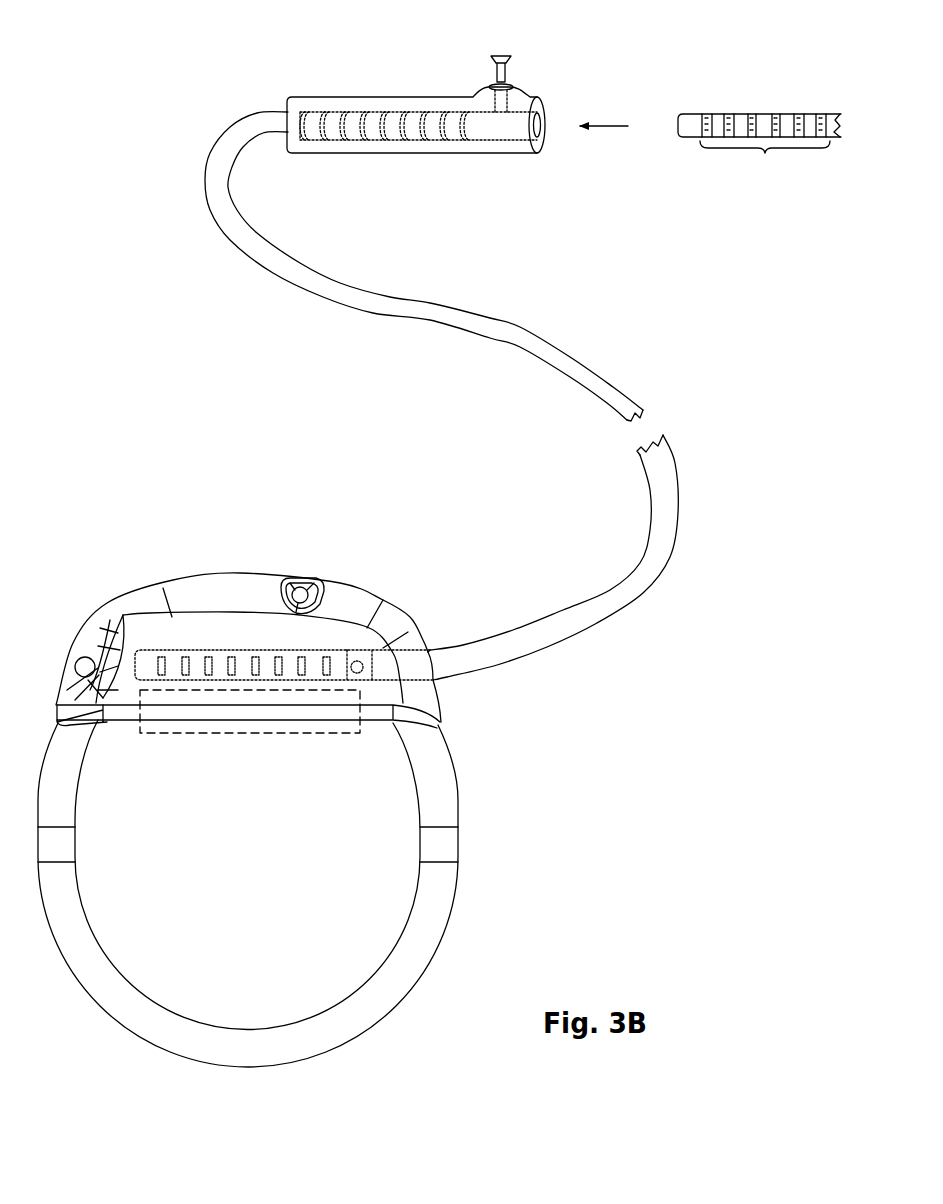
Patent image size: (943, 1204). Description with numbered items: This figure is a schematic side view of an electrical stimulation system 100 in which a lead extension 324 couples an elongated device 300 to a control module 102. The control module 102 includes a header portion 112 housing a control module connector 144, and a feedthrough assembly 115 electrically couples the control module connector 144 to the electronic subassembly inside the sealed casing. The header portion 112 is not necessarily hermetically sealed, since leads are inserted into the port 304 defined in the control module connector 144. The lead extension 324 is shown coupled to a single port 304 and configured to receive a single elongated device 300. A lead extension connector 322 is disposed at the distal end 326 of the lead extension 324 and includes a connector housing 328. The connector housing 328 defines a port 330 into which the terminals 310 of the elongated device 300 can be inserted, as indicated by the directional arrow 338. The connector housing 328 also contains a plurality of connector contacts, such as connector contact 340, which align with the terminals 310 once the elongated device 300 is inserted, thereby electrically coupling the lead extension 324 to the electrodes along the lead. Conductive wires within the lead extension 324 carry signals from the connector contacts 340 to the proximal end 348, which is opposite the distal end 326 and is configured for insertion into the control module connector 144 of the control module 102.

The electrical stimulation system 100 is at (636, 324).
The control module 102 is at (505, 852).
The header portion 112 is at (118, 570).
The feedthrough assembly 115 is at (360, 735).
The control module connector 144 is at (336, 648).
The elongated device 300 is at (731, 96).
The port 304 is at (437, 680).
The terminals 310 is at (765, 146).
The lead extension connector 322 is at (379, 95).
The lead extension 324 is at (525, 329).
The distal end 326 is at (282, 92).
The connector housing 328 is at (330, 105).
The port 330 is at (550, 143).
The directional arrow 338 is at (606, 125).
The connector contact 340 is at (426, 142).
The proximal end 348 is at (443, 632).